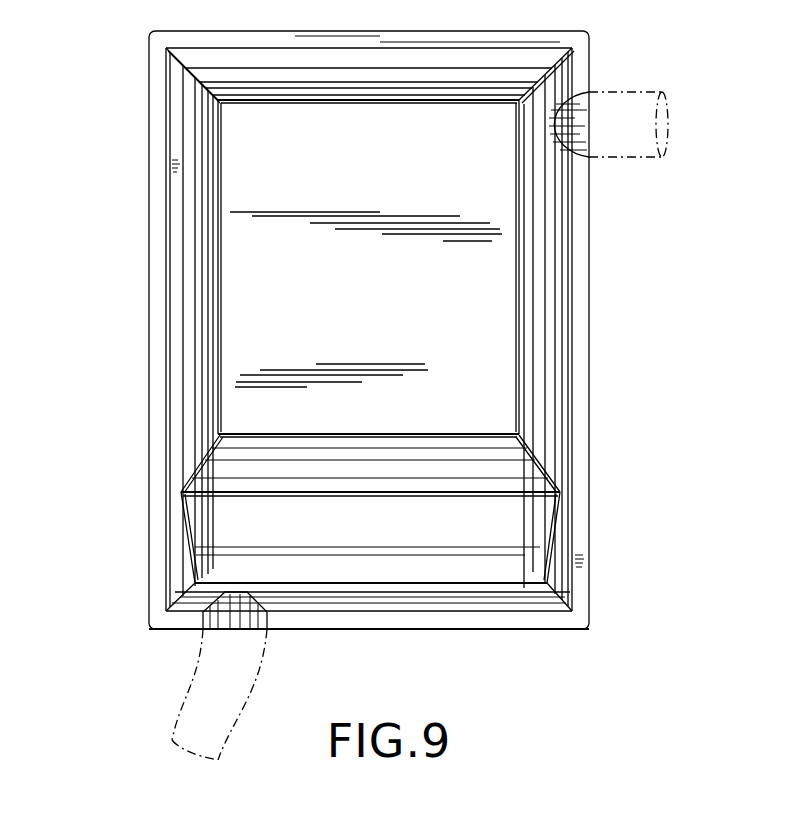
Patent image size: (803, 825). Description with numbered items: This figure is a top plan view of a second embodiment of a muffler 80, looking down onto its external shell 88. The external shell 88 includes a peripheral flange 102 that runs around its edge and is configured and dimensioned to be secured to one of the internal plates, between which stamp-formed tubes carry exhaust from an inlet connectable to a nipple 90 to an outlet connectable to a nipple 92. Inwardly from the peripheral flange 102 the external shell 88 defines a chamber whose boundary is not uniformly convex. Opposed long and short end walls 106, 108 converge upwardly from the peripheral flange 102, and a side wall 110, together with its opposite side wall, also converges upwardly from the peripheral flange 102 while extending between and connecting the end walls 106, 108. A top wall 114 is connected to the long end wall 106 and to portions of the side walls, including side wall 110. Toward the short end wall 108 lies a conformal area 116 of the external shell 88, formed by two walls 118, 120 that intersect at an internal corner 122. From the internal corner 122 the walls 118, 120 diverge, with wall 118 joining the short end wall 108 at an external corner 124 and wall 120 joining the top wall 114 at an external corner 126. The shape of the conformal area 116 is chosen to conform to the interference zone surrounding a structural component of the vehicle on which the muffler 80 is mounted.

The muffler 80 is at (101, 322).
The external shell 88 is at (558, 242).
The nipple 90 is at (186, 701).
The nipple 92 is at (662, 93).
The peripheral flange 102 is at (547, 622).
The long end wall 106 is at (320, 58).
The short end wall 108 is at (397, 603).
The side wall 110 is at (180, 152).
The top wall 114 is at (392, 297).
The conformal area 116 is at (512, 474).
The wall 118 is at (485, 575).
The wall 120 is at (400, 447).
The internal corner 122 is at (560, 497).
The external corner 124 is at (325, 593).
The external corner 126 is at (262, 433).